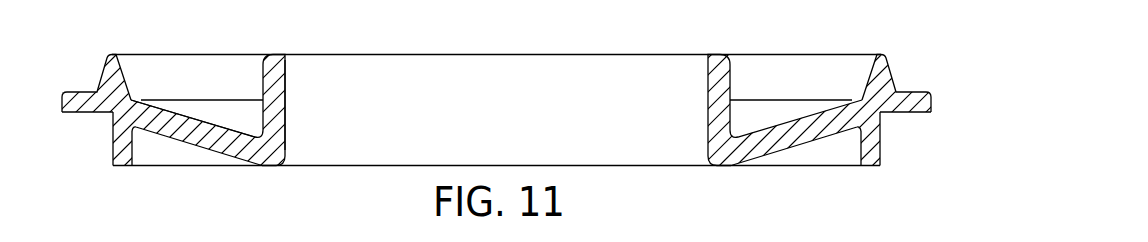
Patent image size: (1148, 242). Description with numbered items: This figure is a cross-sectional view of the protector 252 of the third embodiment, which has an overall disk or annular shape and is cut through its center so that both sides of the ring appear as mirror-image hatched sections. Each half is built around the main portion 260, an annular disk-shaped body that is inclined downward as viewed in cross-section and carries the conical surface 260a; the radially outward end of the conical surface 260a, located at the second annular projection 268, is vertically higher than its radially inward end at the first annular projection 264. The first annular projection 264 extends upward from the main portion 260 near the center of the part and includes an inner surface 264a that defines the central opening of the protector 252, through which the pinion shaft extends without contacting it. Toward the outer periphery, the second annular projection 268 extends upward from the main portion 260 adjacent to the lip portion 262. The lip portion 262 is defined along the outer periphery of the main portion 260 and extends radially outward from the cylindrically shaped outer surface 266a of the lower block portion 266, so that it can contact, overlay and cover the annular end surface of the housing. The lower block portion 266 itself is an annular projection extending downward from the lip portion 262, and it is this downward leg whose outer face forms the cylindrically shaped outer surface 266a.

The protector 252 is at (842, 26).
The main portion 260 is at (200, 135).
The conical surface 260a is at (181, 115).
The lip portion 262 is at (918, 100).
The first annular projection 264 is at (272, 63).
The inner surface 264a is at (286, 96).
The lower block portion 266 is at (122, 151).
The cylindrically shaped outer surface 266a is at (880, 142).
The second annular projection 268 is at (104, 68).